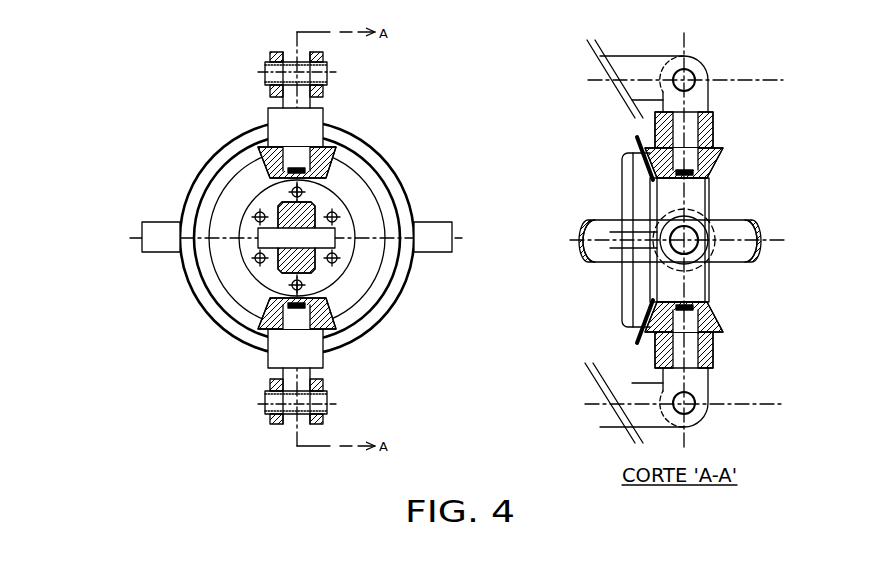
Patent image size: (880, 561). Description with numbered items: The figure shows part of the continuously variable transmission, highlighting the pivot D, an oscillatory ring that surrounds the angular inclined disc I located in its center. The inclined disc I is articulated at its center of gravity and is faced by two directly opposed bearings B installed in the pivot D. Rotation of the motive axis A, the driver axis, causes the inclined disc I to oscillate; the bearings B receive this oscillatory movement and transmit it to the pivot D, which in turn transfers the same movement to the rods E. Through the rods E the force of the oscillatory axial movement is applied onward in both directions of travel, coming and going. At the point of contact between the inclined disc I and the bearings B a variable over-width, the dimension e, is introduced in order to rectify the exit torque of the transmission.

The bearings B is at (382, 208).
The pivot D is at (519, 221).
The motive axis A is at (427, 256).
The inclined disc I is at (538, 245).
The rod E is at (557, 241).
The variable over-width e is at (636, 136).